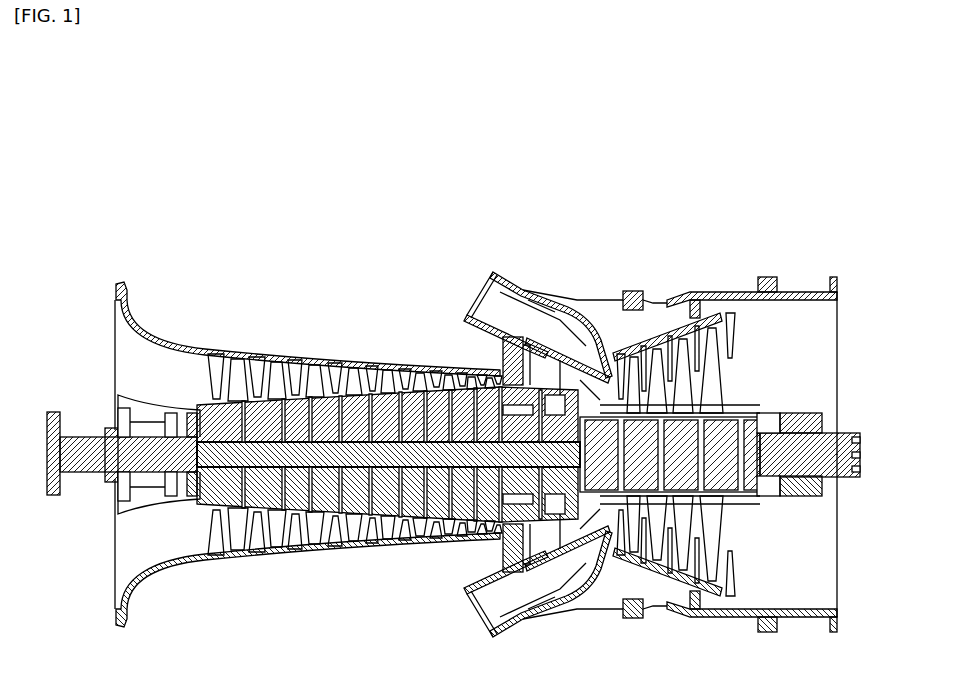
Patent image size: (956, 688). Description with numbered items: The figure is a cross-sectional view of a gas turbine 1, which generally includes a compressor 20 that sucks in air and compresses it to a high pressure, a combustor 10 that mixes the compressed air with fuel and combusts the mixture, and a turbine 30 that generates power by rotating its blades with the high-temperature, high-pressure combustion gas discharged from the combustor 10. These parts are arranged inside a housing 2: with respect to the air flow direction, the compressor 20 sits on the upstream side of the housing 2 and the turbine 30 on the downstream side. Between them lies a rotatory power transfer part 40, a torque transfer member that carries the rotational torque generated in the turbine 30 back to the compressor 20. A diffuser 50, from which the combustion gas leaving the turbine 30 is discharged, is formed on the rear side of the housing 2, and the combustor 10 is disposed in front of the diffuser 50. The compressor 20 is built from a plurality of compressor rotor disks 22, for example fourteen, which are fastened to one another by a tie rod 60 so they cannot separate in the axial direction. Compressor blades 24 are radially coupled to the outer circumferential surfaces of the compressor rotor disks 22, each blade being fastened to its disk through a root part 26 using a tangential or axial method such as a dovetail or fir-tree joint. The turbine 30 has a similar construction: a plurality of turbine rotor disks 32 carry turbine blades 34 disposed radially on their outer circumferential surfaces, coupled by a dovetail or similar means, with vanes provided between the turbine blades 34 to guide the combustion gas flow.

The gas turbine 1 is at (771, 135).
The housing 2 is at (352, 338).
The combustor 10 is at (498, 262).
The compressor 20 is at (175, 497).
The compressor rotor disks 22 is at (250, 398).
The compressor blades 24 is at (267, 398).
The root part 26 is at (280, 388).
The turbine 30 is at (613, 520).
The turbine rotor disks 32 is at (713, 388).
The turbine blades 34 is at (690, 365).
The rotatory power transfer part 40 is at (556, 560).
The diffuser 50 is at (803, 272).
The tie rod 60 is at (122, 502).